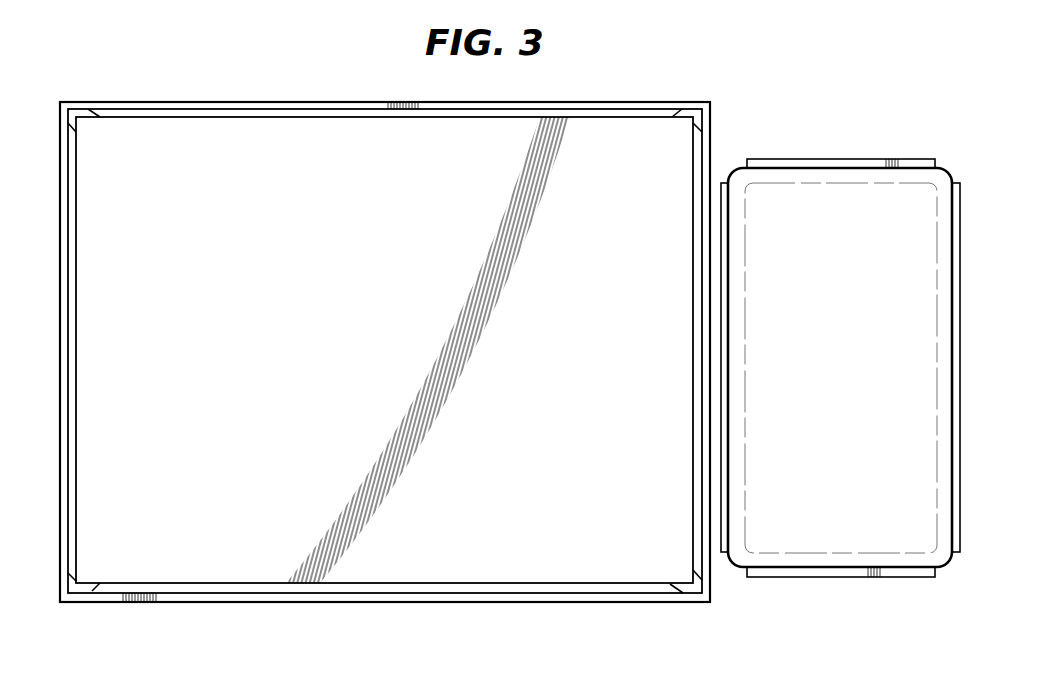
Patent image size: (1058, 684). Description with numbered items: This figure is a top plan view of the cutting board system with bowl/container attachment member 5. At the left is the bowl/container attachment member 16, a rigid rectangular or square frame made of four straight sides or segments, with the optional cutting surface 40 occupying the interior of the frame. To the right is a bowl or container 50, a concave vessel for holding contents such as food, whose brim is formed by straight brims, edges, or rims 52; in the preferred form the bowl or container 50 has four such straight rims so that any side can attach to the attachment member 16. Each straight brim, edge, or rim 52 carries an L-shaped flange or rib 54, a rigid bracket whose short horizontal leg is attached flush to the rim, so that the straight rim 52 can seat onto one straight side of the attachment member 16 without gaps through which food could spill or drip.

The cutting board system with bowl/container attachment member 5 is at (155, 70).
The bowl/container attachment member 16 is at (268, 104).
The cutting surface 40 is at (370, 339).
The bowl or container 50 is at (854, 378).
The straight brim, edge, or rim 52 is at (840, 378).
The L-shaped flange or rib 54 is at (845, 159).